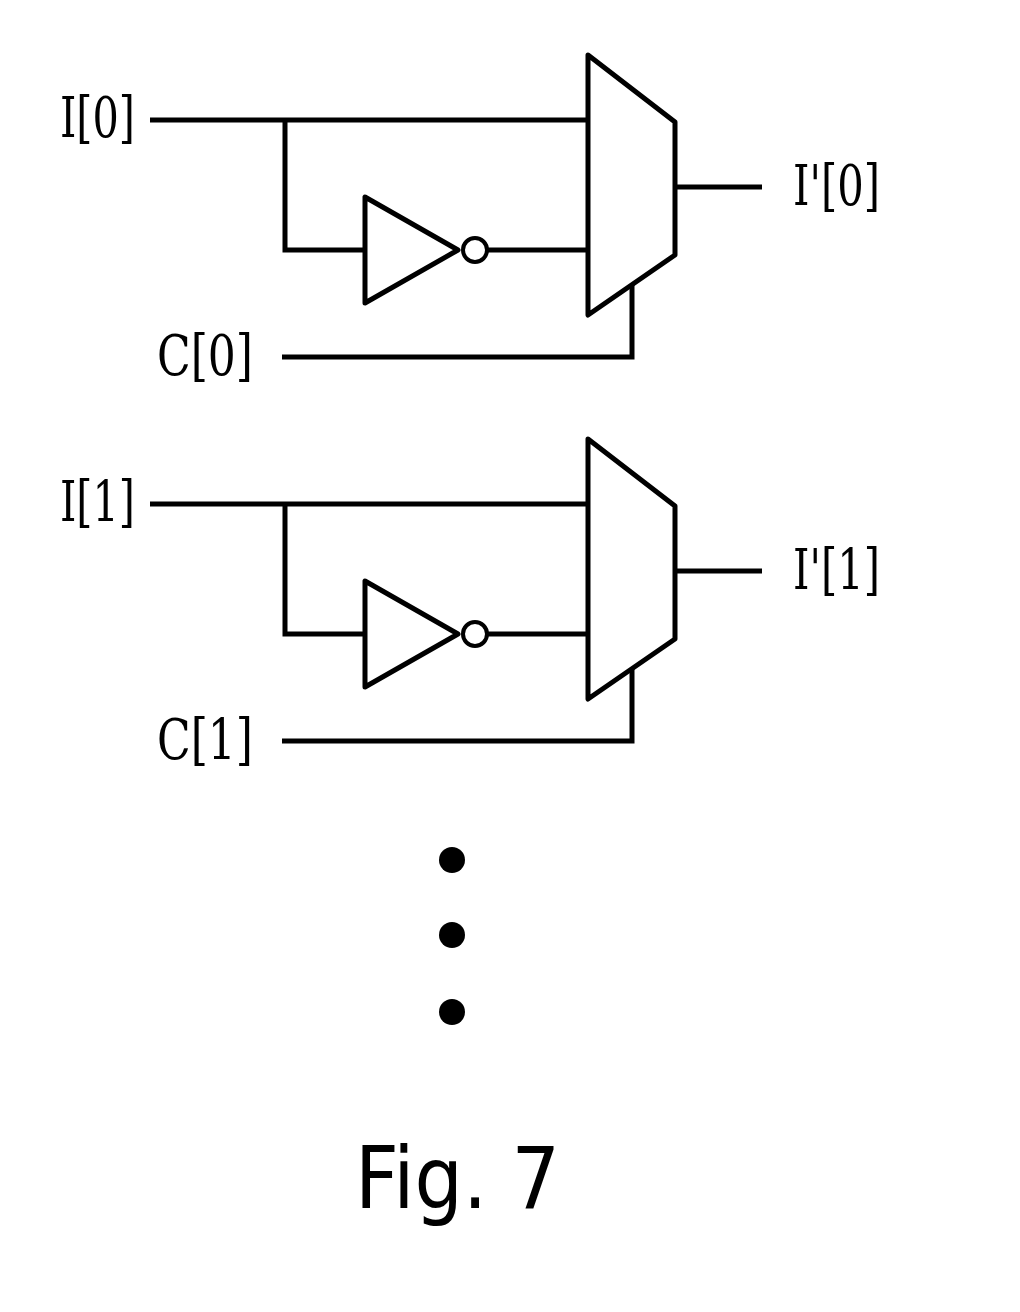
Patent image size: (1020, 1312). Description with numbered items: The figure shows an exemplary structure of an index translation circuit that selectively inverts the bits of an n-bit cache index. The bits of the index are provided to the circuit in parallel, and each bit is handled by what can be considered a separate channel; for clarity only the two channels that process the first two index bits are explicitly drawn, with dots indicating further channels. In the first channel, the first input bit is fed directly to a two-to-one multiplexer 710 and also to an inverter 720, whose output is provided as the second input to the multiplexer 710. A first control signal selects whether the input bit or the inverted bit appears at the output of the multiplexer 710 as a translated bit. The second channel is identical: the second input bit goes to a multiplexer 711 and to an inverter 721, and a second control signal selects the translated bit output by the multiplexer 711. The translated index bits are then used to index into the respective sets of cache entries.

The 2:1 multiplexer 710 is at (622, 82).
The 2:1 multiplexer 711 is at (672, 548).
The inverter 720 is at (403, 218).
The inverter 721 is at (450, 609).